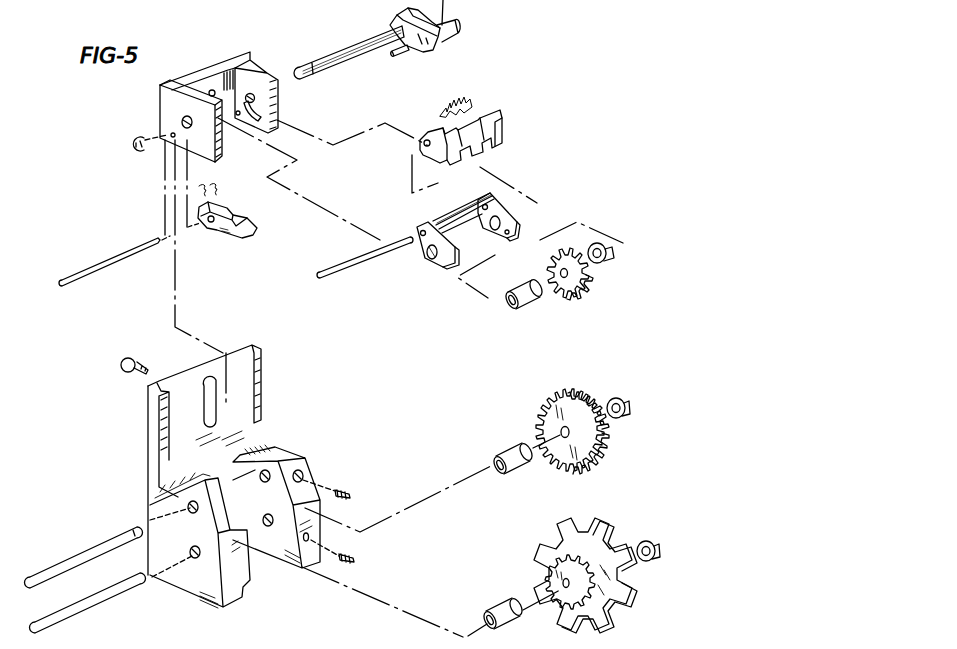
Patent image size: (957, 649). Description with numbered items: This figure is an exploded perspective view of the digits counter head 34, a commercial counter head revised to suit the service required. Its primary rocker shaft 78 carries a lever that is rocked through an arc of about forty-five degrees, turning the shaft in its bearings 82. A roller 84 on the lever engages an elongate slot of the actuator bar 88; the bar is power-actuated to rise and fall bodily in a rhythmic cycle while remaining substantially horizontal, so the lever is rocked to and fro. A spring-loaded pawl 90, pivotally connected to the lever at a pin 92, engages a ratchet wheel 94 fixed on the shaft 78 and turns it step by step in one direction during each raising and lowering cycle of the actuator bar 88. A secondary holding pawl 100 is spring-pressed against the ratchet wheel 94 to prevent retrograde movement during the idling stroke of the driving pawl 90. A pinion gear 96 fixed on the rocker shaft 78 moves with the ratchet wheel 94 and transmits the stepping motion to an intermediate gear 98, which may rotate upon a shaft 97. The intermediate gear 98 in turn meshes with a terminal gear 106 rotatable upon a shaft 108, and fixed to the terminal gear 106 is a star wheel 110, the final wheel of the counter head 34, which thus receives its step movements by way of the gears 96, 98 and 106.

The counter head 34 is at (153, 412).
The rocker shaft 78 is at (347, 50).
The bearings 82 is at (184, 120).
The roller 84 is at (453, 38).
The actuator bar 88 is at (252, 547).
The spring-loaded pawl 90 is at (500, 123).
The pin 92 is at (405, 58).
The ratchet wheel 94 is at (560, 297).
The pinion gear 96 is at (595, 288).
The shaft 97 is at (88, 552).
The intermediate gear 98 is at (607, 432).
The secondary pawl 100 is at (233, 240).
The terminal gear 106 is at (547, 545).
The shaft 108 is at (97, 603).
The star wheel 110 is at (590, 553).